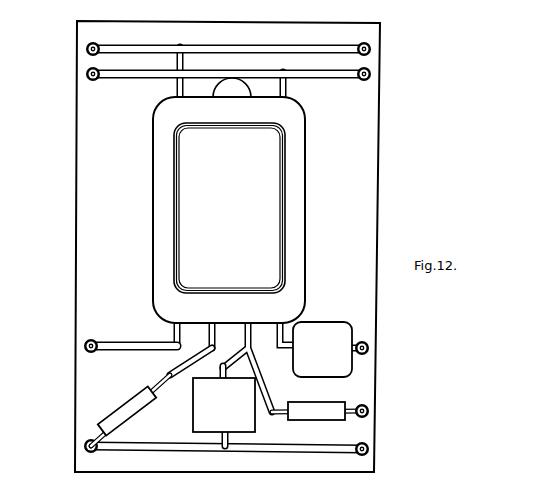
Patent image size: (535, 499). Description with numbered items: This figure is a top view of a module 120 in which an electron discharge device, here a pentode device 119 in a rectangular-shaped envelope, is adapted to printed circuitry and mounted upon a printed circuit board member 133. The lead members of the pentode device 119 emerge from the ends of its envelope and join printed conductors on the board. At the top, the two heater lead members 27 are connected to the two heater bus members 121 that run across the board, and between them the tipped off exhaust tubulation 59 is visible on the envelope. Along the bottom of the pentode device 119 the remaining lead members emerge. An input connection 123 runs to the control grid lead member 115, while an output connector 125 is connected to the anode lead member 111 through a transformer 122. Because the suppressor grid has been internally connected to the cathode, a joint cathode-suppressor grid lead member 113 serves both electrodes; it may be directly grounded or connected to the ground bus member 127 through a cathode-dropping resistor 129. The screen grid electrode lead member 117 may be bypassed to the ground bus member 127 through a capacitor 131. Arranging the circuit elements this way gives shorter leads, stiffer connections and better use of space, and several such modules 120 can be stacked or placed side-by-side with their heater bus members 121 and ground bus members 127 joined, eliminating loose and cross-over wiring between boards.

The module 120 is at (54, 235).
The printed circuit board member 133 is at (76, 136).
The heater bus members 121 is at (228, 56).
The heater lead members 27 is at (178, 91).
The tipped off exhaust tubulation 59 is at (243, 89).
The pentode device 119 is at (153, 191).
The input connection 123 is at (121, 342).
The control grid lead member 115 is at (175, 332).
The joint cathode-suppressor grid lead member 113 is at (212, 336).
The secondary lead 117 is at (249, 333).
The anode lead member 111 is at (282, 333).
The transformer 122 is at (319, 330).
The output connector 125 is at (361, 340).
The cathode-dropping resistor 129 is at (128, 404).
The capacitor 131 is at (193, 407).
The ground bus member 127 is at (134, 446).